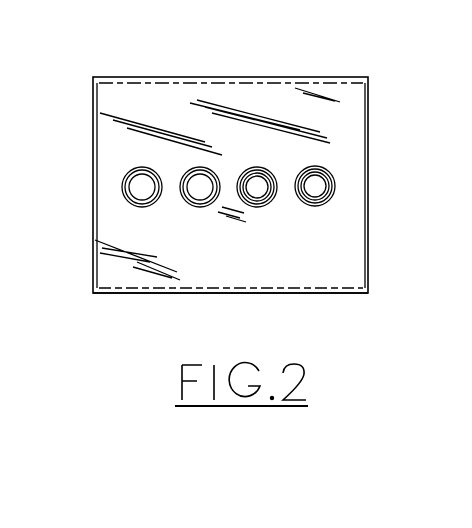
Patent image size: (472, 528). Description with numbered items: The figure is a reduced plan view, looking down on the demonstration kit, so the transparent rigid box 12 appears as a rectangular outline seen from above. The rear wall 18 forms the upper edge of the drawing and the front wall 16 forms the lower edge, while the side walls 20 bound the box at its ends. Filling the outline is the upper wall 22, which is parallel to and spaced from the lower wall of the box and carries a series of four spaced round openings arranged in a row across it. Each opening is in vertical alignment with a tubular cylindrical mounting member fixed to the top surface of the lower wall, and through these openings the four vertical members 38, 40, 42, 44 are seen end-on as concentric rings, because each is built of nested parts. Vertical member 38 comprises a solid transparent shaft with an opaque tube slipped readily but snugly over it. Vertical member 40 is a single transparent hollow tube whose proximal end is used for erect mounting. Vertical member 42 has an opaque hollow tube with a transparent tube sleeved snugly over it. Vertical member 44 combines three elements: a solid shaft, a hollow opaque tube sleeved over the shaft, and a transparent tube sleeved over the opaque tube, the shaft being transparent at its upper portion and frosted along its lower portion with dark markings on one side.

The transparent rigid box 12 is at (370, 123).
The front wall 16 is at (322, 295).
The rear wall 18 is at (212, 77).
The side walls 20 is at (463, 309).
The upper wall 22 is at (344, 143).
The vertical member 38 is at (124, 186).
The vertical member 40 is at (200, 207).
The vertical member 42 is at (263, 207).
The vertical member 44 is at (333, 194).